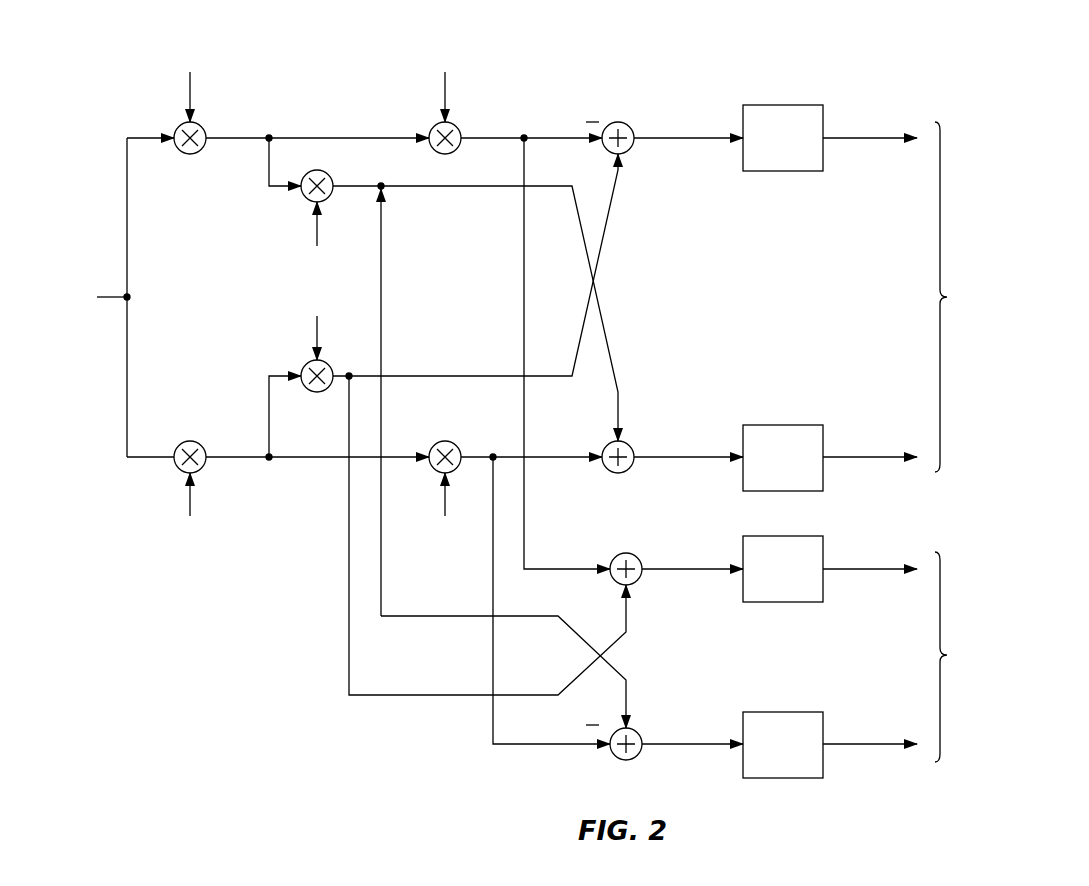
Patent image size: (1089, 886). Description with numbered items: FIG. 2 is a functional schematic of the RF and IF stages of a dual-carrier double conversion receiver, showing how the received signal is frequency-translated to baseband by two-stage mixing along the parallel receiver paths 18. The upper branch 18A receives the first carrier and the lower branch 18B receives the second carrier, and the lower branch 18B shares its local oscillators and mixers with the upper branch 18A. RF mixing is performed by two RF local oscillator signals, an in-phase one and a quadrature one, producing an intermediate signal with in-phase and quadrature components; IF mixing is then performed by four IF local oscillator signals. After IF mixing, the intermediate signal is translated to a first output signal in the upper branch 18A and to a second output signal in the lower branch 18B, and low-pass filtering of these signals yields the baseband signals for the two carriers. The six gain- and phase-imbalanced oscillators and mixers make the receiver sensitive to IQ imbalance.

The receiver paths 18 is at (556, 410).
The upper branch 18A is at (897, 236).
The lower branch 18B is at (905, 629).